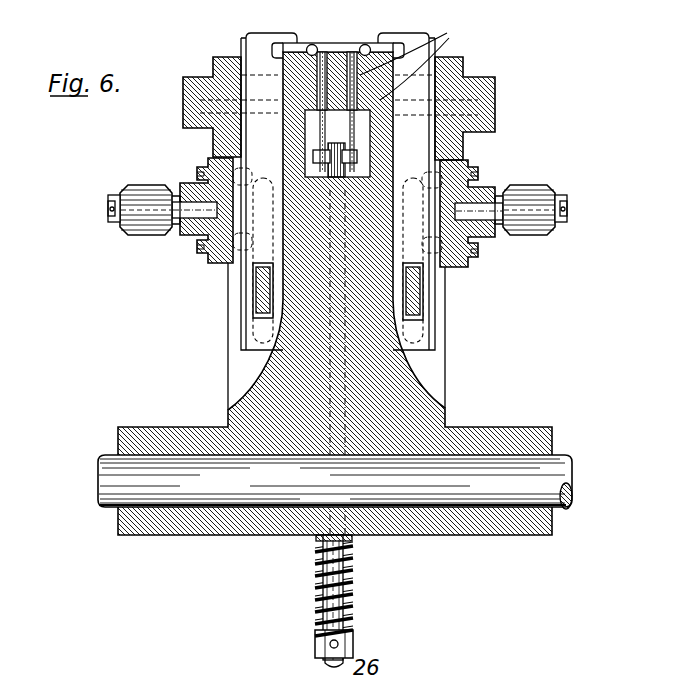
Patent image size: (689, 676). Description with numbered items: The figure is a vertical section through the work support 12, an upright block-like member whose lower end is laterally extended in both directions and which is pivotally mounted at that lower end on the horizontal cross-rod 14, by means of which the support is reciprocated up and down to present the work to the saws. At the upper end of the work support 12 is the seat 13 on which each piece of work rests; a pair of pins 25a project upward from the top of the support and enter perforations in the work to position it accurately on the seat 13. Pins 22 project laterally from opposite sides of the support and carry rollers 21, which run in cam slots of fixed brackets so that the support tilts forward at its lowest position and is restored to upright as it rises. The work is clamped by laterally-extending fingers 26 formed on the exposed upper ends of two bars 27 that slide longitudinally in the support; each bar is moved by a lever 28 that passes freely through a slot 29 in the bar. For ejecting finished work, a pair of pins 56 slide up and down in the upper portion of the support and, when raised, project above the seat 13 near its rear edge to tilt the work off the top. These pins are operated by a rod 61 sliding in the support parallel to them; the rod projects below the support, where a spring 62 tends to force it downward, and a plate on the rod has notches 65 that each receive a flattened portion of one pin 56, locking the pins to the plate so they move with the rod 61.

The work support 12 is at (265, 393).
The seat 13 is at (327, 47).
The horizontal cross-rod 14 is at (510, 490).
The rollers 21 is at (145, 236).
The pins 22 is at (194, 212).
The pins 25a is at (312, 45).
The clamping fingers 26 is at (294, 35).
The bars 27 is at (240, 134).
The levers 28 is at (263, 295).
The slot 29 is at (262, 323).
The ejecting pins 56 is at (418, 61).
The rod 61 is at (330, 560).
The spring 62 is at (348, 597).
The notches 65 is at (312, 146).